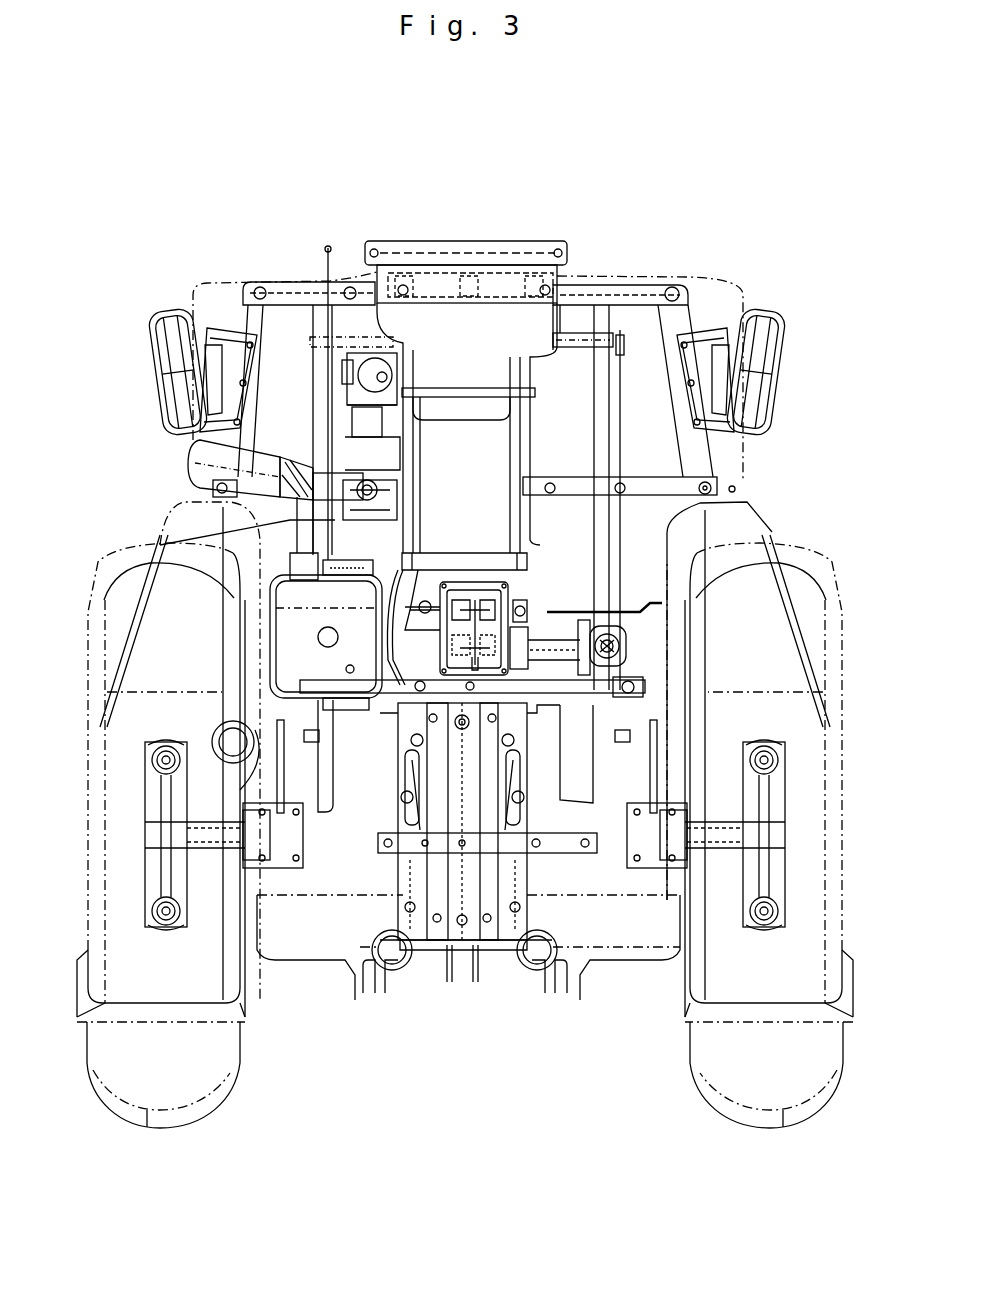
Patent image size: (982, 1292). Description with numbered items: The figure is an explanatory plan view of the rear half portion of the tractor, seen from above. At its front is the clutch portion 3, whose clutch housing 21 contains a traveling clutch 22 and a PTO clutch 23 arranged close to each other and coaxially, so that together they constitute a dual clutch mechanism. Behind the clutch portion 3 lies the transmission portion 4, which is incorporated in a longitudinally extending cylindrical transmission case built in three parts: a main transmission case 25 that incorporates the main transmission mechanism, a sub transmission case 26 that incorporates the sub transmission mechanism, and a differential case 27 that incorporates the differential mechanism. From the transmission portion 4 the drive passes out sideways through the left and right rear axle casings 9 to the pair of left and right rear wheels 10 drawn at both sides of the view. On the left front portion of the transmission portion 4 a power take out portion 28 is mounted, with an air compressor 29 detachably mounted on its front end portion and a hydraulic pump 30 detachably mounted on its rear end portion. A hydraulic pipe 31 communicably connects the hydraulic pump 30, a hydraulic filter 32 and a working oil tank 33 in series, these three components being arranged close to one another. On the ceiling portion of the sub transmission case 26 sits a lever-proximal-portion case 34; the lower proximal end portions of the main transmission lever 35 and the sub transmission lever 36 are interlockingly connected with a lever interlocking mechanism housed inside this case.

The clutch portion 3 is at (472, 222).
The transmission portion 4 is at (565, 537).
The rear axle casing 9 is at (323, 925).
The rear wheel 10 is at (825, 540).
The clutch housing 21 is at (543, 313).
The traveling clutch 22 is at (418, 240).
The PTO clutch 23 is at (393, 277).
The main transmission case 25 is at (490, 446).
The sub transmission case 26 is at (497, 573).
The differential case 27 is at (527, 766).
The power take out portion 28 is at (340, 423).
The air compressor 29 is at (352, 360).
The hydraulic pump 30 is at (327, 512).
The hydraulic pipe 31 is at (283, 538).
The hydraulic filter 32 is at (193, 467).
The working oil tank 33 is at (290, 660).
The lever-proximal-portion case 34 is at (537, 614).
The main transmission lever 35 is at (613, 650).
The sub transmission lever 36 is at (520, 617).